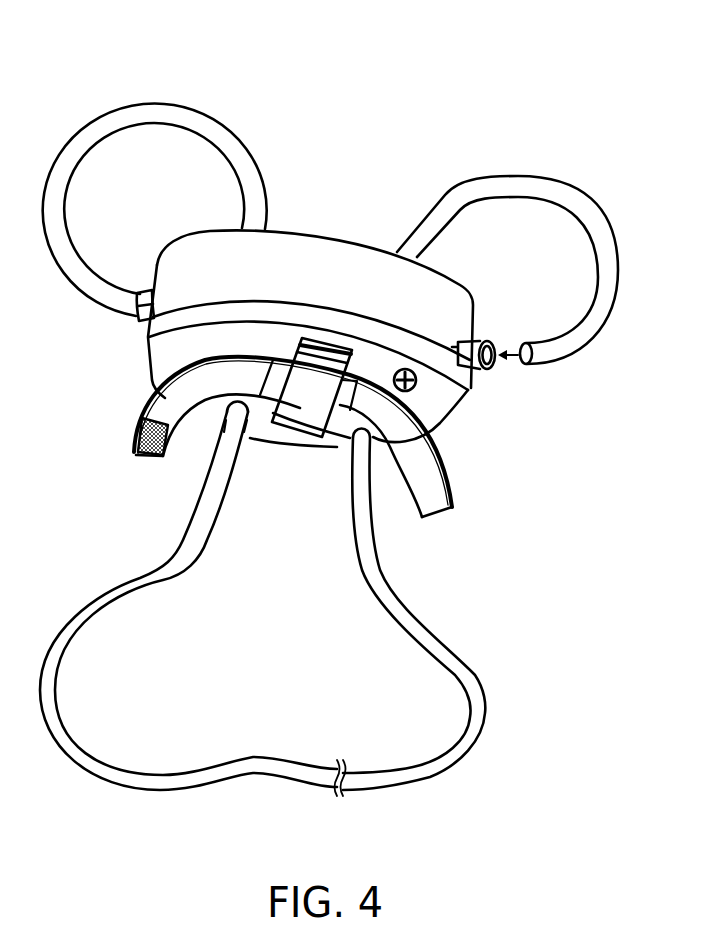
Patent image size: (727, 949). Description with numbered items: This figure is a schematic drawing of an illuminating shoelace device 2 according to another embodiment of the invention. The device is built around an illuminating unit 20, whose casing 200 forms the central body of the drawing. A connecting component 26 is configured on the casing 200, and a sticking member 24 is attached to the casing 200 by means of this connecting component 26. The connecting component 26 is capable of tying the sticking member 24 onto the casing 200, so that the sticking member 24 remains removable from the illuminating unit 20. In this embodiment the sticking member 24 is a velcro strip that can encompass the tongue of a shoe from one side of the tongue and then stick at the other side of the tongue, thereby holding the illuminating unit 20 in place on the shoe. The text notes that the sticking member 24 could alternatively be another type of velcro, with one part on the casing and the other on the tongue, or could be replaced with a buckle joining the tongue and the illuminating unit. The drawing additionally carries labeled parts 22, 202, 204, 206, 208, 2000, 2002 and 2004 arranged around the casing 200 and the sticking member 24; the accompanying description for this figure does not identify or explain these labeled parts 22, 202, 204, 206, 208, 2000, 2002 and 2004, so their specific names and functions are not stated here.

The illuminating shoelace device 2 is at (326, 76).
The illuminating unit 20 is at (382, 168).
The ear hook rings 22 is at (540, 177).
The sticking member 24 is at (137, 421).
The connecting component 26 is at (303, 400).
The casing 200 is at (300, 230).
The head strap 202 is at (348, 447).
The ring end connector 204 is at (497, 374).
The strap connecting portion 206 is at (222, 440).
The left socket 208 is at (137, 326).
The socket 2000 is at (466, 287).
The fastening portion 2002 is at (469, 390).
The curved support band 2004 is at (470, 394).